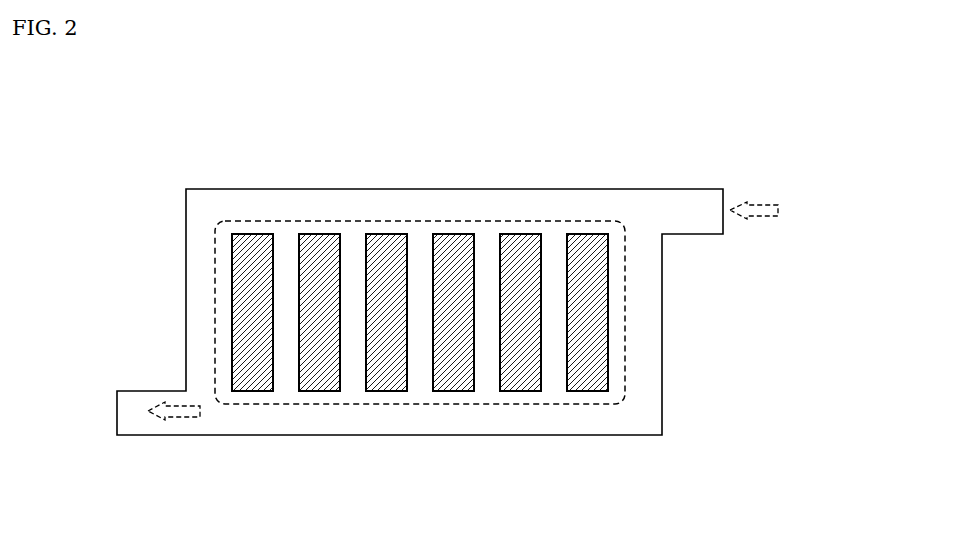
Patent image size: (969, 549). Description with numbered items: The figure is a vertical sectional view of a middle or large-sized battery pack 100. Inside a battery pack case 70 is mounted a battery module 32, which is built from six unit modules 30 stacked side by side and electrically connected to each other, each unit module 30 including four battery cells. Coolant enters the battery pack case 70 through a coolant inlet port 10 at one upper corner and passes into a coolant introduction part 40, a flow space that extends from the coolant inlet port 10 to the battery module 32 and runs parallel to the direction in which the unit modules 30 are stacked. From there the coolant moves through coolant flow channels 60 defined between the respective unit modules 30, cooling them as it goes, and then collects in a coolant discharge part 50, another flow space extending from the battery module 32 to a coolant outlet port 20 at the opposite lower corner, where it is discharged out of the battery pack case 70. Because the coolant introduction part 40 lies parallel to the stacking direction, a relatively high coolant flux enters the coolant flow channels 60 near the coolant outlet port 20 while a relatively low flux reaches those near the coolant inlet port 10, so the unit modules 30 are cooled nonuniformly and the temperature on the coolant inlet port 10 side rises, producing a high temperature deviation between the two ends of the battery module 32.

The middle or large-sized battery pack 100 is at (62, 106).
The coolant inlet port 10 is at (724, 234).
The coolant outlet port 20 is at (117, 410).
The unit module 30 is at (260, 382).
The battery module 32 is at (617, 222).
The coolant introduction part 40 is at (695, 215).
The coolant discharge part 50 is at (444, 420).
The coolant flow channel 60 is at (552, 238).
The battery pack case 70 is at (298, 186).